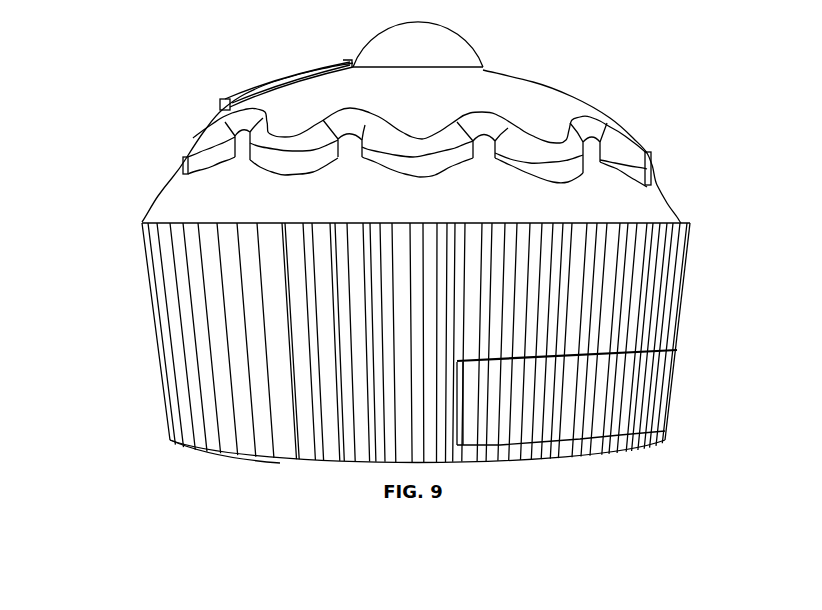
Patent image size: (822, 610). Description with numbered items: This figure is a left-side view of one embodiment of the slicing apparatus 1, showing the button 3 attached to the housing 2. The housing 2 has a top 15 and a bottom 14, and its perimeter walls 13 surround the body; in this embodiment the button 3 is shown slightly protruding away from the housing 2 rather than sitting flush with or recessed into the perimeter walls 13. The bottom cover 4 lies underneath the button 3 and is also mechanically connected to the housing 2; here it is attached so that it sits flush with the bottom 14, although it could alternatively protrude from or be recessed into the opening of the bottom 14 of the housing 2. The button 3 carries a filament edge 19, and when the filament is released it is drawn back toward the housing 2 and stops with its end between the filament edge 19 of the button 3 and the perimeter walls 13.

The slicing apparatus 1 is at (122, 225).
The housing 2 is at (642, 282).
The button 3 is at (525, 397).
The bottom cover 4 is at (587, 452).
The perimeter walls 13 is at (167, 426).
The bottom 14 is at (668, 437).
The top 15 is at (692, 225).
The filament edge 19 is at (458, 437).